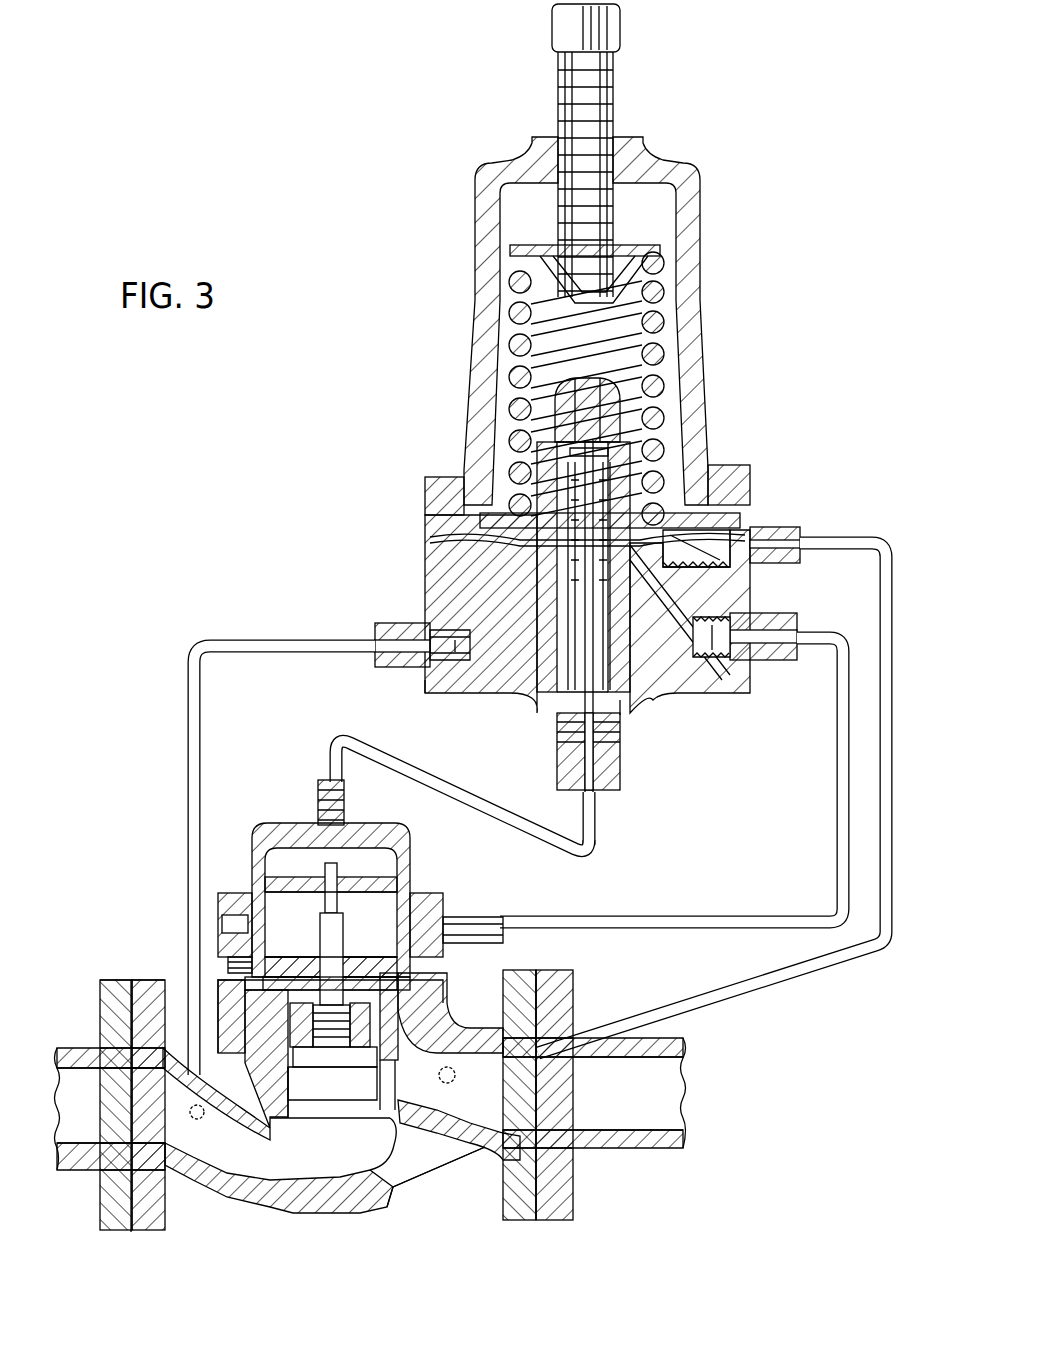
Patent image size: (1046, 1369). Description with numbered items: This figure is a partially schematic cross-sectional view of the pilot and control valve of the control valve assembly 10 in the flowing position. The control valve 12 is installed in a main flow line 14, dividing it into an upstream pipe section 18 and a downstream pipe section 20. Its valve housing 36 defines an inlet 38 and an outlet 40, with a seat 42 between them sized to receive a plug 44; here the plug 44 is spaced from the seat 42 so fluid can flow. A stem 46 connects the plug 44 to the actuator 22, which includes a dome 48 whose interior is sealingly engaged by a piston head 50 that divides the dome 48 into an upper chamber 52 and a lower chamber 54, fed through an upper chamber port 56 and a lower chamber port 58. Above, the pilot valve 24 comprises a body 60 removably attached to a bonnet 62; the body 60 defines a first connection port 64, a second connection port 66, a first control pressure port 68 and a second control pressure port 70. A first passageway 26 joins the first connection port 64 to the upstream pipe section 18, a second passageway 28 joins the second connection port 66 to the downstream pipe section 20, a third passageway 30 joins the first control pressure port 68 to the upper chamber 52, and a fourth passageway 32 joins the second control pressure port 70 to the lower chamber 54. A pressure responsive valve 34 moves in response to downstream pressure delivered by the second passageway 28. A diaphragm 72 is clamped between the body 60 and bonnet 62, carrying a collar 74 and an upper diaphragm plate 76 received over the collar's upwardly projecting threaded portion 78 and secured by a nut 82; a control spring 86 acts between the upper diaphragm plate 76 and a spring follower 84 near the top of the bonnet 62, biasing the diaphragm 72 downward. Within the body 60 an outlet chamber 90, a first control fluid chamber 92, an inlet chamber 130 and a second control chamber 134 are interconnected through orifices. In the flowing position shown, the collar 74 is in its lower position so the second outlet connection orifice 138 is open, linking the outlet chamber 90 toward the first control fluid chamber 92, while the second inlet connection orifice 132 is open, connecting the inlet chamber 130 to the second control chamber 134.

The control valve assembly 10 is at (275, 527).
The control valve 12 is at (230, 1188).
The main flow line 14 is at (73, 1056).
The upstream pipe section 18 is at (95, 1043).
The downstream pipe section 20 is at (690, 1062).
The actuator 22 is at (226, 916).
The pilot valve 24 is at (473, 226).
The first passageway 26 is at (188, 708).
The second passageway 28 is at (878, 568).
The third passageway 30 is at (492, 810).
The fourth passageway 32 is at (842, 798).
The pressure responsive valve 34 is at (553, 586).
The valve housing 36 is at (440, 1152).
The inlet 38 is at (128, 1113).
The outlet 40 is at (548, 1108).
The seat 42 is at (357, 1085).
The plug 44 is at (305, 1070).
The stem 46 is at (333, 943).
The dome 48 is at (278, 832).
The piston head 50 is at (298, 886).
The upper chamber 52 is at (382, 856).
The lower chamber 54 is at (404, 898).
The upper chamber port 56 is at (325, 782).
The lower chamber port 58 is at (505, 920).
The body 60 is at (430, 686).
The bonnet 62 is at (482, 305).
The first connection port 64 is at (380, 652).
The second connection port 66 is at (800, 540).
The first control pressure port 68 is at (602, 796).
The second control pressure port 70 is at (805, 662).
The diaphragm 72 is at (735, 462).
The collar 74 is at (535, 552).
The upper diaphragm plate 76 is at (560, 512).
The upwardly projecting threaded portion 78 is at (608, 450).
The nut 82 is at (565, 398).
The spring follower 84 is at (655, 260).
The control spring 86 is at (662, 297).
The outlet chamber 90 is at (740, 530).
The first control fluid chamber 92 is at (604, 716).
The inlet chamber 130 is at (458, 648).
The second inlet connection orifice 132 is at (622, 705).
The second control chamber 134 is at (712, 642).
The second outlet connection orifice 138 is at (565, 505).